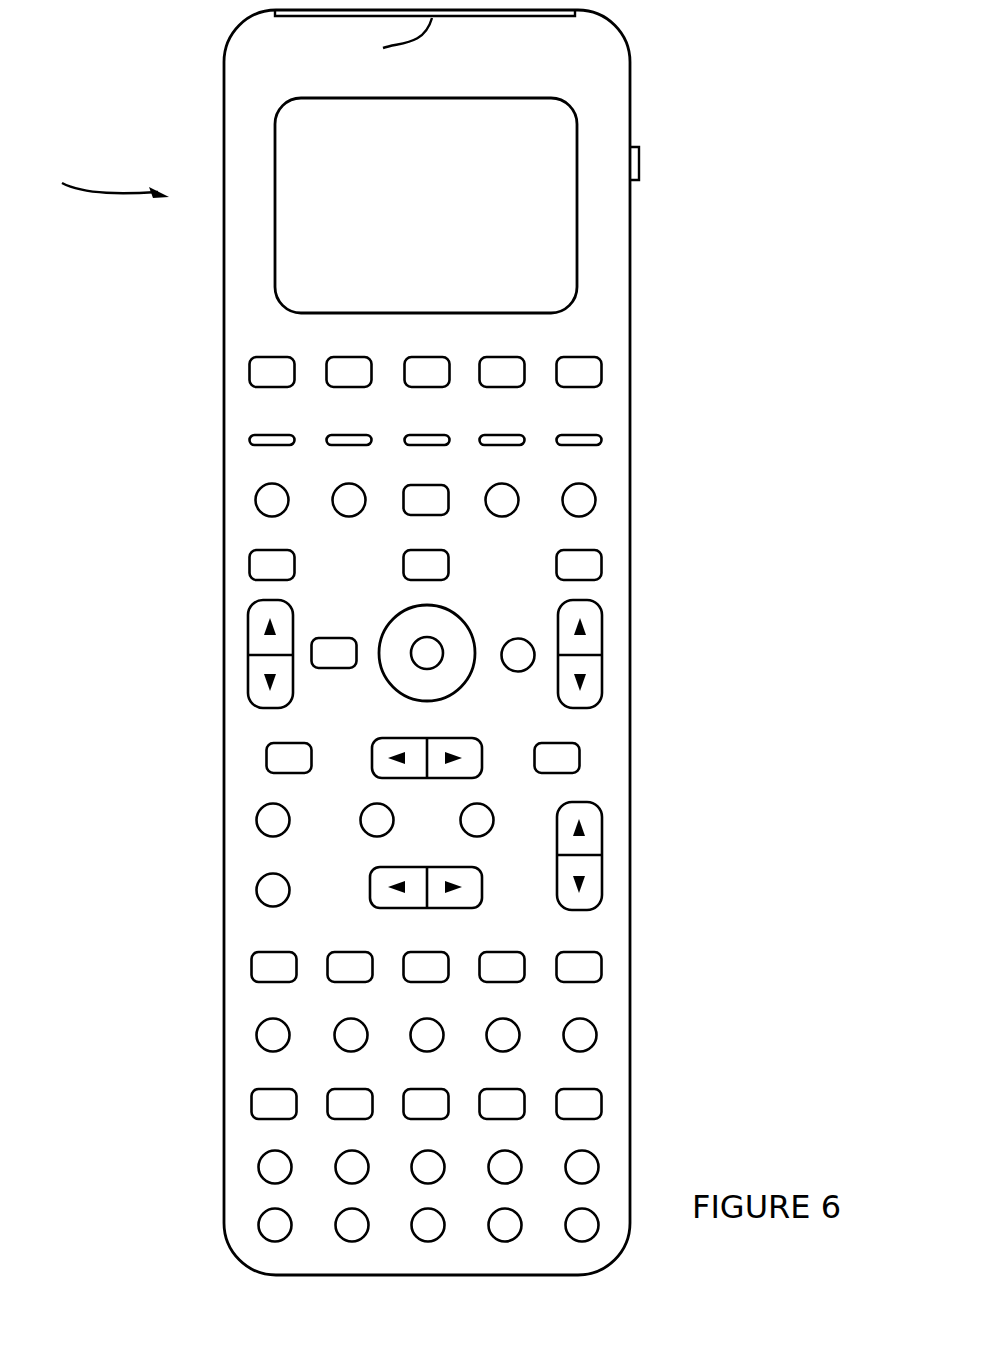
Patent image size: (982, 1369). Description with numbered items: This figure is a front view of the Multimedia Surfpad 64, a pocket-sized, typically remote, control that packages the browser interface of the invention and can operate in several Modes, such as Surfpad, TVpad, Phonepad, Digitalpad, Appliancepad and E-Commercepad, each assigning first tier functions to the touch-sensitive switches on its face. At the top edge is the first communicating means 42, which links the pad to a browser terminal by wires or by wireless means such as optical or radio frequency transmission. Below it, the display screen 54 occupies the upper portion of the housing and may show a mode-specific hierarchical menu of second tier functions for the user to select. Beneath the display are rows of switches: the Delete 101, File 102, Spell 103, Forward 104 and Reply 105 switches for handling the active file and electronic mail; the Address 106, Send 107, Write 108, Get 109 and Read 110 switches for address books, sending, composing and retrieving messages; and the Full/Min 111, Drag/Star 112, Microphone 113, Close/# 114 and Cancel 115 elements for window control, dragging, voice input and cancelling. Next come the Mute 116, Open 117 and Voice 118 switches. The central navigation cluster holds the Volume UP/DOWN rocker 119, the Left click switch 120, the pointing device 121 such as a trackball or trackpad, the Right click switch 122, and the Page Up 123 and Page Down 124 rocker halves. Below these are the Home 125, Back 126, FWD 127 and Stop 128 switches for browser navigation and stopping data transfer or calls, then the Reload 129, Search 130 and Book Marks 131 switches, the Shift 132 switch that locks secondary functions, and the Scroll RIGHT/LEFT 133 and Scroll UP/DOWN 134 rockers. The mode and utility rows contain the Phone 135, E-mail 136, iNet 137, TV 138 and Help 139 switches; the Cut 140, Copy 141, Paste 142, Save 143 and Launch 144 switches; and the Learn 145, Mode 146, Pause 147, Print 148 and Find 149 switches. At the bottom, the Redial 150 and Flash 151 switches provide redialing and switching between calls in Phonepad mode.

The Multimedia Surfpad 64 is at (337, 642).
The first communicating means 42 is at (425, 41).
The display screen 54 is at (426, 205).
The Delete switch 101 is at (272, 372).
The File switch 102 is at (349, 372).
The Spell switch 103 is at (427, 372).
The Forward switch 104 is at (502, 372).
The Reply switch 105 is at (579, 372).
The Address switch 106 is at (272, 426).
The Send switch 107 is at (349, 426).
The Write switch 108 is at (427, 425).
The Get switch 109 is at (502, 426).
The Read switch 110 is at (579, 425).
The Full/Min switch 111 is at (271, 487).
The Drag/Star switch 112 is at (348, 487).
The Microphone 113 is at (426, 500).
The Close/# switch 114 is at (501, 487).
The Cancel switch 115 is at (578, 487).
The Mute switch 116 is at (272, 565).
The Open switch 117 is at (426, 565).
The Voice switch 118 is at (579, 565).
The Volume UP/DOWN switch 119 is at (290, 652).
The Left switch 120 is at (334, 653).
The pointing device 121 is at (427, 653).
The Right switch 122 is at (519, 643).
The Page Up switch 123 is at (560, 648).
The Page Down switch 124 is at (560, 685).
The Home switch 125 is at (289, 758).
The Back switch 126 is at (427, 745).
The FWD switch 127 is at (449, 745).
The Stop switch 128 is at (557, 758).
The Reload switch 129 is at (272, 808).
The Search switch 130 is at (376, 808).
The Book Marks switch 131 is at (476, 808).
The Shift switch 132 is at (272, 876).
The Scroll RIGHT/LEFT switch 133 is at (426, 875).
The Scroll UP/DOWN switch 134 is at (560, 856).
The Phone switch 135 is at (274, 967).
The E-mail switch 136 is at (350, 967).
The iNet switch 137 is at (426, 967).
The TV switch 138 is at (502, 967).
The Help switch 139 is at (579, 967).
The Cut switch 140 is at (272, 1022).
The Copy switch 141 is at (350, 1022).
The Paste switch 142 is at (426, 1022).
The Save switch 143 is at (502, 1022).
The Launch switch 144 is at (579, 1022).
The Learn switch 145 is at (274, 1104).
The Mode switch 146 is at (350, 1104).
The Pause switch 147 is at (426, 1104).
The Print switch 148 is at (502, 1104).
The Find switch 149 is at (579, 1104).
The Redial switch 150 is at (351, 1238).
The Flash switch 151 is at (504, 1238).